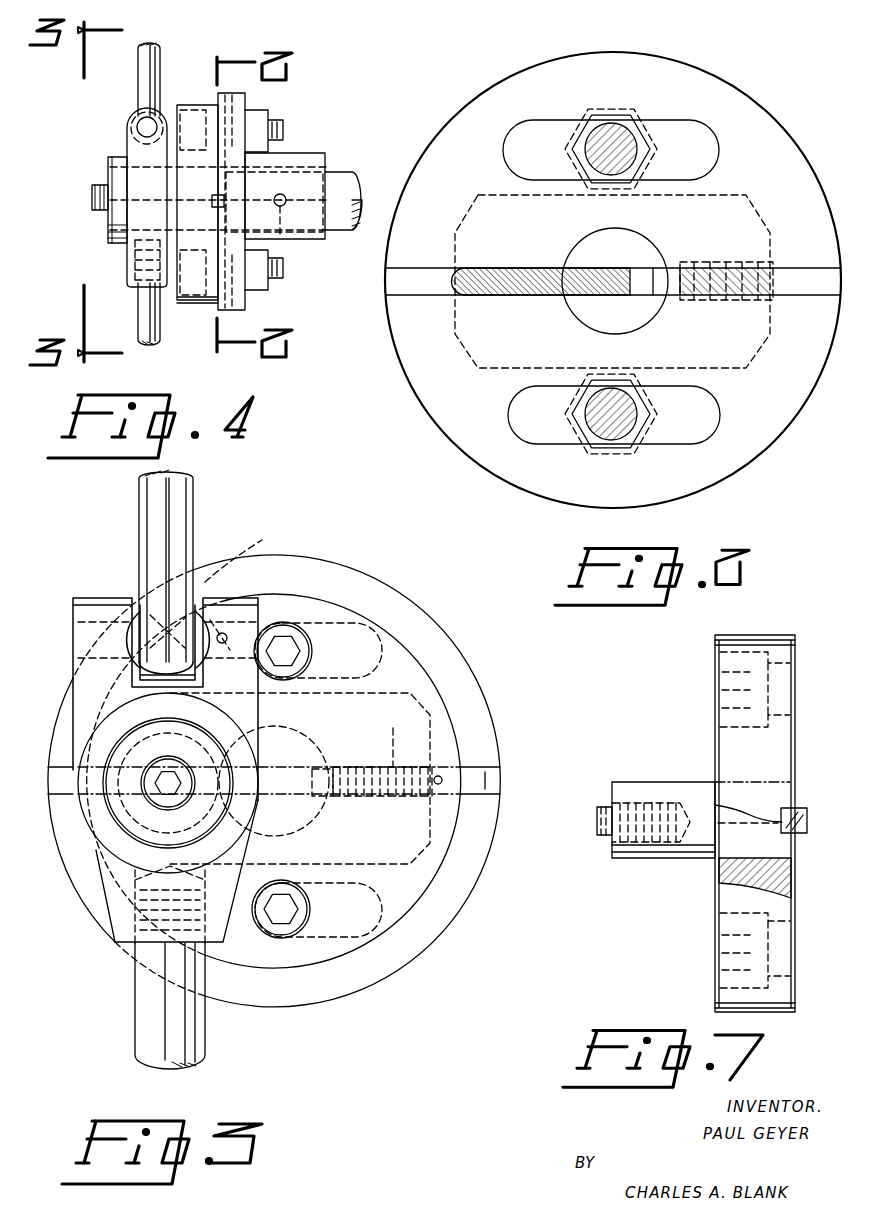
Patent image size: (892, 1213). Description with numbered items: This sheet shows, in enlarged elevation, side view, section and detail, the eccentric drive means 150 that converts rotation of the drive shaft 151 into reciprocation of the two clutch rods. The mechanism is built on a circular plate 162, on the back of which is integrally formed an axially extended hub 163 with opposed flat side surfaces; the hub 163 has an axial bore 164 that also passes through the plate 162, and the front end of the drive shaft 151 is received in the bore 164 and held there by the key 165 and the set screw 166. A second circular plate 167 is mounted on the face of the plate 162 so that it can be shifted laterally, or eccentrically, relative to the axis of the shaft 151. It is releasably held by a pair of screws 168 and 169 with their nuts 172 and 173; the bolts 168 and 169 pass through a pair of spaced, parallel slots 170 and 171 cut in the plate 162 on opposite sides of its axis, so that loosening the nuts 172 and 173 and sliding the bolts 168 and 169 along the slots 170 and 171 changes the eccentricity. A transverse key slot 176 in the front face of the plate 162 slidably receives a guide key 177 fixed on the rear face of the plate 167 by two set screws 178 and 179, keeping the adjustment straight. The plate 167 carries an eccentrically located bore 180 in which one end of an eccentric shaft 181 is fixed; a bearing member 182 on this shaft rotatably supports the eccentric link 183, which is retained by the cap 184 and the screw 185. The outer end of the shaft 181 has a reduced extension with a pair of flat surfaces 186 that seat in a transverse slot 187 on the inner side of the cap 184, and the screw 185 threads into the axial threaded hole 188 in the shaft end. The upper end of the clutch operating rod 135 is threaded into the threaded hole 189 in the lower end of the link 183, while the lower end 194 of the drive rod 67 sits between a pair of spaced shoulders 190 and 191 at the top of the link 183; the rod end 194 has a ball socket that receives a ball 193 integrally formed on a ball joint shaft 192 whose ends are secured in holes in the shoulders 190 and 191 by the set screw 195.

In FIG. 4, the drive rod 67 is at (160, 58).
In FIG. 5, the drive rod 67 is at (177, 507).
In FIG. 4, the clutch operating rod 135 is at (150, 338).
In FIG. 5, the clutch operating rod 135 is at (205, 1035).
In FIG. 4, the eccentric drive means 150 is at (100, 230).
In FIG. 5, the eccentric drive means 150 is at (115, 950).
In FIG. 4, the drive shaft 151 is at (345, 178).
In FIG. 6, the drive shaft 151 is at (640, 260).
In FIG. 5, the drive shaft 151 is at (330, 805).
In FIG. 4, the circular plate 162 is at (247, 100).
In FIG. 6, the circular plate 162 is at (724, 98).
In FIG. 5, the circular plate 162 is at (483, 740).
In FIG. 7, the circular plate 162 is at (755, 823).
In FIG. 4, the hub 163 is at (310, 162).
In FIG. 6, the hub 163 is at (737, 224).
In FIG. 5, the hub 163 is at (440, 707).
In FIG. 4, the axial bore 164 is at (286, 170).
In FIG. 6, the axial bore 164 is at (633, 241).
In FIG. 4, the key 165 is at (326, 232).
In FIG. 6, the key 165 is at (676, 284).
In FIG. 5, the key 165 is at (335, 766).
In FIG. 4, the set screw 166 is at (282, 207).
In FIG. 6, the set screw 166 is at (739, 296).
In FIG. 5, the set screw 166 is at (394, 739).
In FIG. 4, the second circular plate 167 is at (208, 106).
In FIG. 5, the second circular plate 167 is at (413, 895).
In FIG. 7, the second circular plate 167 is at (728, 755).
In FIG. 4, the screw 168 is at (196, 151).
In FIG. 6, the screw 168 is at (608, 137).
In FIG. 5, the screw 168 is at (291, 631).
In FIG. 4, the screw 169 is at (193, 312).
In FIG. 6, the screw 169 is at (622, 425).
In FIG. 5, the screw 169 is at (295, 929).
In FIG. 4, the slot 170 is at (226, 106).
In FIG. 6, the slot 170 is at (666, 131).
In FIG. 5, the slot 170 is at (341, 627).
In FIG. 4, the slot 171 is at (230, 293).
In FIG. 6, the slot 171 is at (693, 431).
In FIG. 5, the slot 171 is at (337, 935).
In FIG. 4, the nut 172 is at (260, 120).
In FIG. 6, the nut 172 is at (575, 150).
In FIG. 4, the nut 173 is at (265, 285).
In FIG. 6, the nut 173 is at (581, 423).
In FIG. 6, the key slot 176 is at (410, 286).
In FIG. 5, the key slot 176 is at (483, 773).
In FIG. 4, the guide key 177 is at (213, 206).
In FIG. 6, the guide key 177 is at (514, 288).
In FIG. 5, the guide key 177 is at (290, 800).
In FIG. 7, the guide key 177 is at (807, 812).
In FIG. 5, the set screw 178 is at (78, 838).
In FIG. 5, the set screw 179 is at (442, 784).
In FIG. 7, the set screw 179 is at (730, 825).
In FIG. 7, the eccentrically located bore 180 is at (782, 782).
In FIG. 7, the eccentric shaft 181 is at (640, 860).
In FIG. 4, the bearing member 182 is at (127, 150).
In FIG. 4, the eccentric link 183 is at (141, 262).
In FIG. 5, the eccentric link 183 is at (118, 900).
In FIG. 4, the cap 184 is at (110, 177).
In FIG. 5, the cap 184 is at (245, 738).
In FIG. 4, the screw 185 is at (92, 198).
In FIG. 5, the screw 185 is at (168, 775).
In FIG. 7, the flat surfaces 186 is at (600, 838).
In FIG. 5, the transverse slot 187 is at (224, 728).
In FIG. 4, the threaded hole 188 is at (140, 240).
In FIG. 7, the threaded hole 188 is at (640, 800).
In FIG. 5, the threaded hole 189 is at (140, 945).
In FIG. 5, the shoulder 190 is at (85, 600).
In FIG. 5, the shoulder 191 is at (237, 615).
In FIG. 4, the ball joint shaft 192 is at (140, 118).
In FIG. 5, the ball joint shaft 192 is at (73, 635).
In FIG. 5, the ball 193 is at (245, 560).
In FIG. 5, the lower end of the rod 194 is at (152, 613).
In FIG. 5, the set screw 195 is at (226, 637).